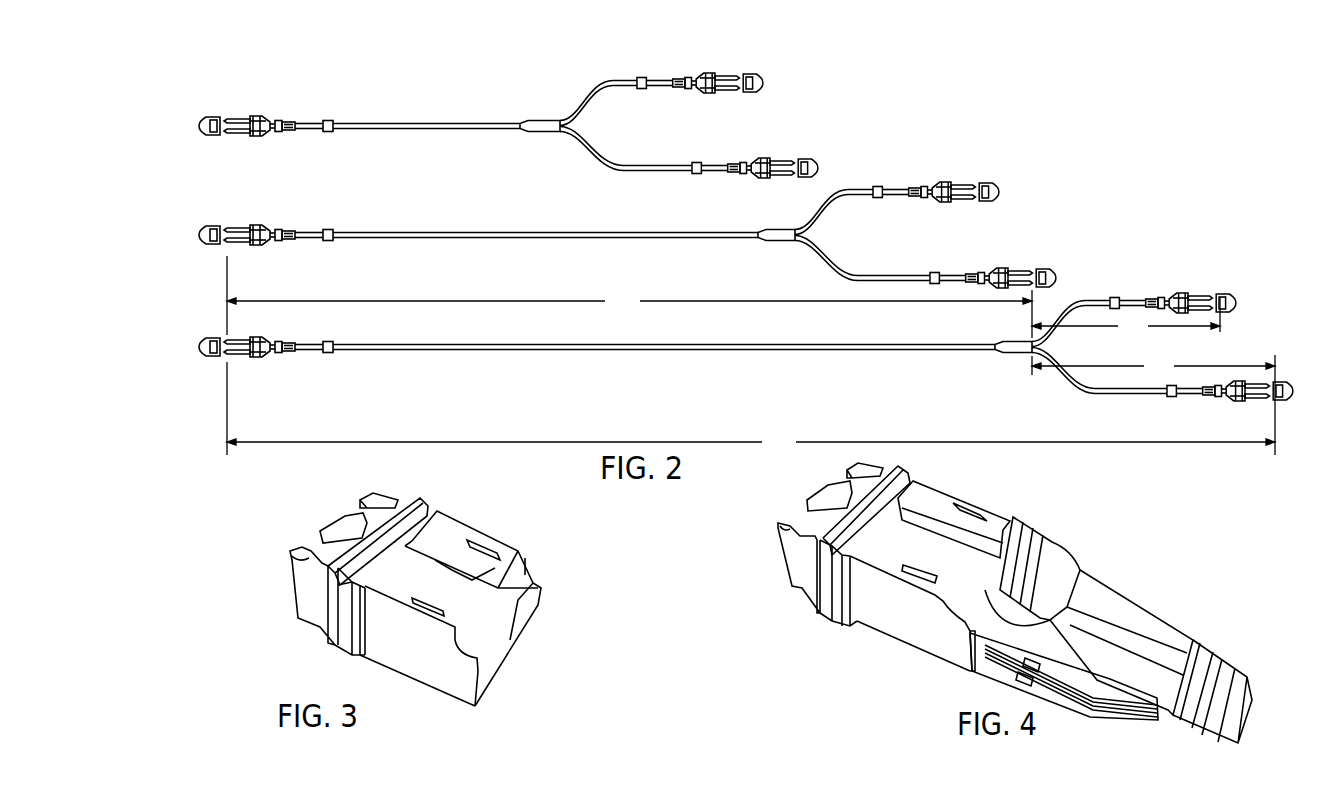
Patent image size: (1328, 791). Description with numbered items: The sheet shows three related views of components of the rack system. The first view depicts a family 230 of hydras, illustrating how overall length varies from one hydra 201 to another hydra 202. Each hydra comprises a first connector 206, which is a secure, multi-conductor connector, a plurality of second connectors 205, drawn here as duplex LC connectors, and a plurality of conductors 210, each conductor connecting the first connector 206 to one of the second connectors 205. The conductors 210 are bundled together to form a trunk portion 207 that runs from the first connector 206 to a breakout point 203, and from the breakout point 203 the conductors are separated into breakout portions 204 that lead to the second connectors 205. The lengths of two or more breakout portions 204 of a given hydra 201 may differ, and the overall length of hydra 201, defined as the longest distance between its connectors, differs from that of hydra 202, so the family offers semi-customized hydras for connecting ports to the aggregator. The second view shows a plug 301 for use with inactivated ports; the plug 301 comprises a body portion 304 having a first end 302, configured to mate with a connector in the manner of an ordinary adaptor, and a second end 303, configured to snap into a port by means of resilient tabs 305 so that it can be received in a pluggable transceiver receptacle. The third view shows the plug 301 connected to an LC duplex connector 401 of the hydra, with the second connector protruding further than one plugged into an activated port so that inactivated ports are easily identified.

In FIG. 2, the family of hydras 230 is at (857, 103).
In FIG. 2, the hydra 201 is at (798, 355).
In FIG. 2, the hydra 202 is at (556, 244).
In FIG. 2, the breakout point 203 is at (1014, 355).
In FIG. 2, the breakout portions 204 is at (1100, 393).
In FIG. 2, the second connectors 205 is at (1180, 292).
In FIG. 2, the first connector 206 is at (262, 358).
In FIG. 2, the trunk portion 207 is at (483, 352).
In FIG. 2, the conductors 210 is at (677, 353).
In FIG. 3, the plug 301 is at (551, 560).
In FIG. 4, the plug 301 is at (968, 591).
In FIG. 3, the first end 302 is at (470, 684).
In FIG. 4, the first end 302 is at (963, 646).
In FIG. 3, the second end 303 is at (332, 636).
In FIG. 4, the second end 303 is at (820, 585).
In FIG. 3, the body portion 304 is at (440, 662).
In FIG. 3, the resilient tabs 305 is at (312, 608).
In FIG. 4, the LC duplex connector 401 is at (1128, 598).